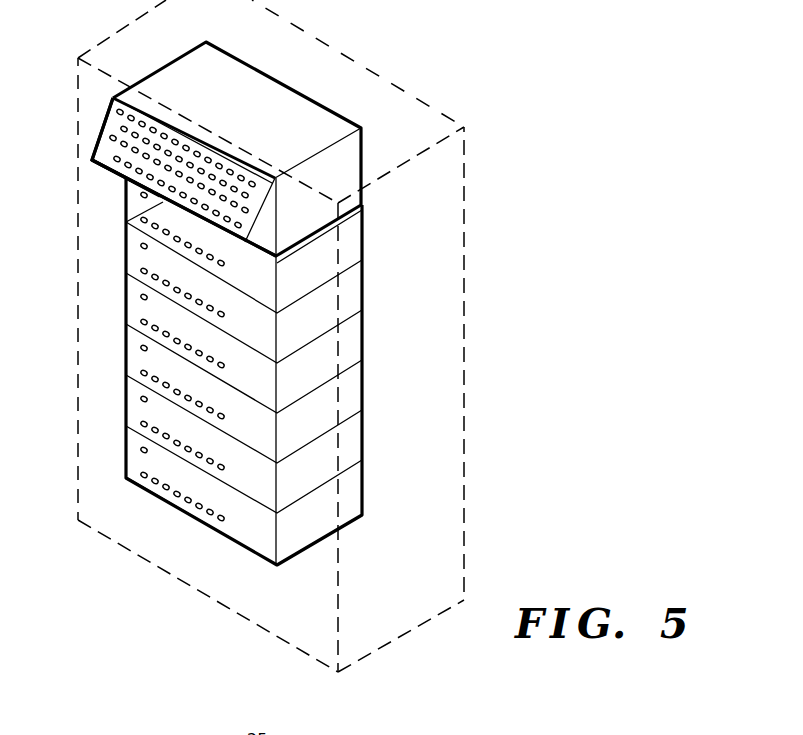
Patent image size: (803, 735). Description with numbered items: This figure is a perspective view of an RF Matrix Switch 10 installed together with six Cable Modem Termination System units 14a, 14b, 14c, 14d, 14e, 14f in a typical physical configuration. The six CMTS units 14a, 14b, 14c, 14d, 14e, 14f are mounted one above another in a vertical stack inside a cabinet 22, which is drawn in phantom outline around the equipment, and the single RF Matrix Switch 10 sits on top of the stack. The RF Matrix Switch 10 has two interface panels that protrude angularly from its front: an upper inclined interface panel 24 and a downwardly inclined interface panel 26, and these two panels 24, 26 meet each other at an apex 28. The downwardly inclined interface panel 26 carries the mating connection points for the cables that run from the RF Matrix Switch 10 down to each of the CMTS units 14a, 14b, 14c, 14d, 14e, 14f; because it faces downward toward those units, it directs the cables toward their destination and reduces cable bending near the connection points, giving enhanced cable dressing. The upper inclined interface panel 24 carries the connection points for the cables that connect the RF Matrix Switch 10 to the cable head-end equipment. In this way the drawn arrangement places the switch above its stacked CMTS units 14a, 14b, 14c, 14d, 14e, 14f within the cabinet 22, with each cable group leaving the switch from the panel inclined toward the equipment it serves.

The RF Matrix Switch 10 is at (318, 127).
The cabinet 22 is at (353, 61).
The upper inclined interface panel 24 is at (113, 113).
The downwardly inclined interface panel 26 is at (126, 222).
The apex 28 is at (118, 173).
The Cable Modem Termination System 14a is at (350, 237).
The Cable Modem Termination System 14b is at (350, 289).
The Cable Modem Termination System 14c is at (350, 340).
The Cable Modem Termination System 14d is at (350, 390).
The Cable Modem Termination System 14e is at (350, 441).
The Cable Modem Termination System 14f is at (350, 492).